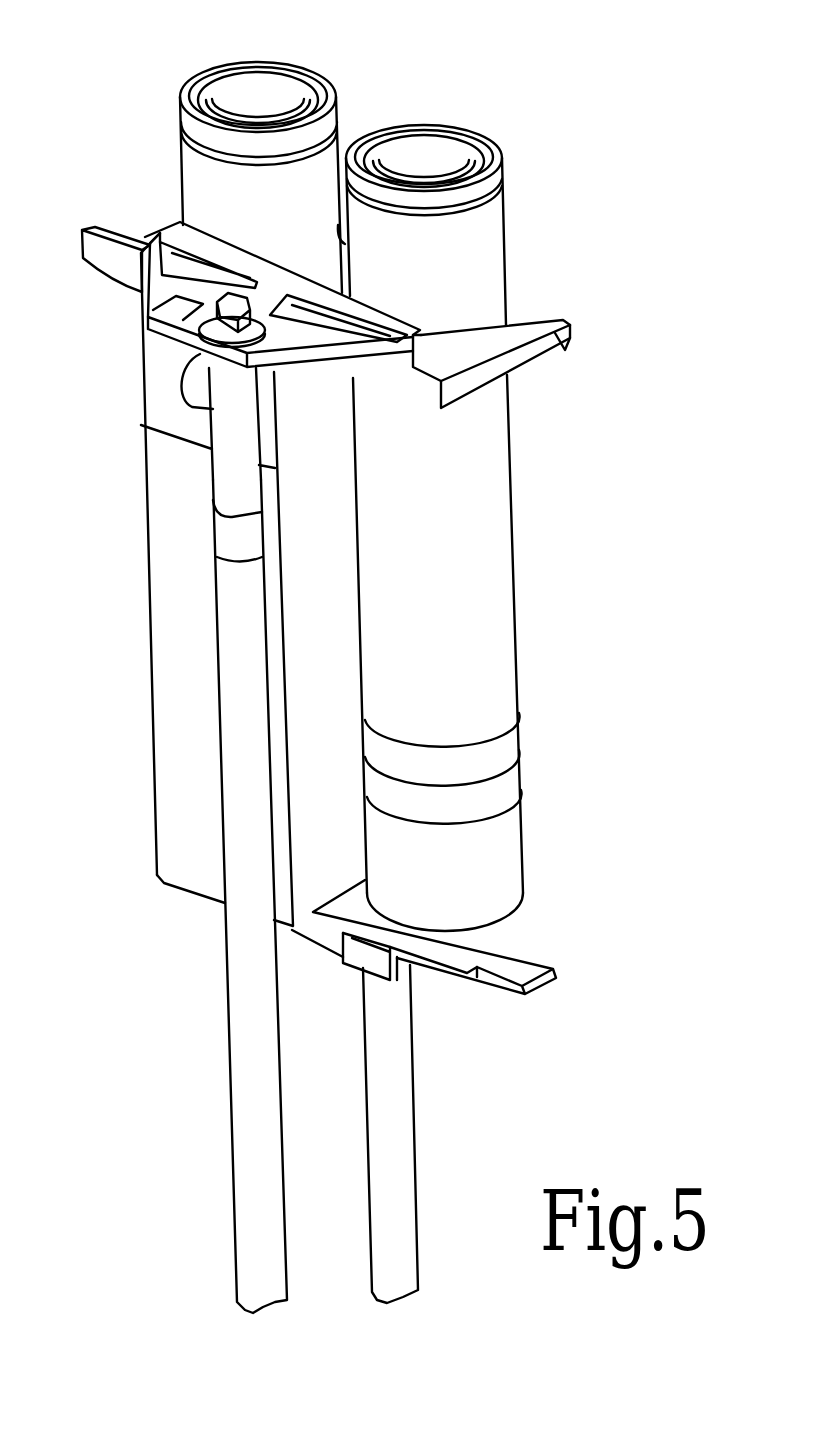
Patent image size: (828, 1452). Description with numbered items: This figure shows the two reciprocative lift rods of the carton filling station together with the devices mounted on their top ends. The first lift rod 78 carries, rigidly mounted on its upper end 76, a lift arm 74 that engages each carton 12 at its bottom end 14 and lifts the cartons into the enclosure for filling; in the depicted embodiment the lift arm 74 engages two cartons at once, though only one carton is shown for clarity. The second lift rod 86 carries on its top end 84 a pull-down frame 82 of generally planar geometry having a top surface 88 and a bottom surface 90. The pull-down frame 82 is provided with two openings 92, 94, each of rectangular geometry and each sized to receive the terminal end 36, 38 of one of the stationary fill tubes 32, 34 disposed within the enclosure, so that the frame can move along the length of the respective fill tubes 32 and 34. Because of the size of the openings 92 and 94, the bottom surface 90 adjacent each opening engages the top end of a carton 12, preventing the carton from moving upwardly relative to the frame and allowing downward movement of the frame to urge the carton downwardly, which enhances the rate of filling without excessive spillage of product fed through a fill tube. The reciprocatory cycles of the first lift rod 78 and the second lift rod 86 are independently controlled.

The carton 12 is at (150, 683).
The bottom end 14 is at (165, 882).
The fill tube 32 is at (192, 207).
The fill tube 34 is at (515, 565).
The terminal end 36 is at (290, 74).
The terminal end 38 is at (435, 128).
The lift arm 74 is at (552, 963).
The upper end 76 is at (395, 982).
The first lift rod 78 is at (418, 1105).
The pull-down frame 82 is at (572, 322).
The top end 84 is at (223, 398).
The second lift rod 86 is at (212, 485).
The top surface 88 is at (508, 300).
The bottom surface 90 is at (520, 355).
The opening 92 is at (337, 225).
The opening 94 is at (530, 310).